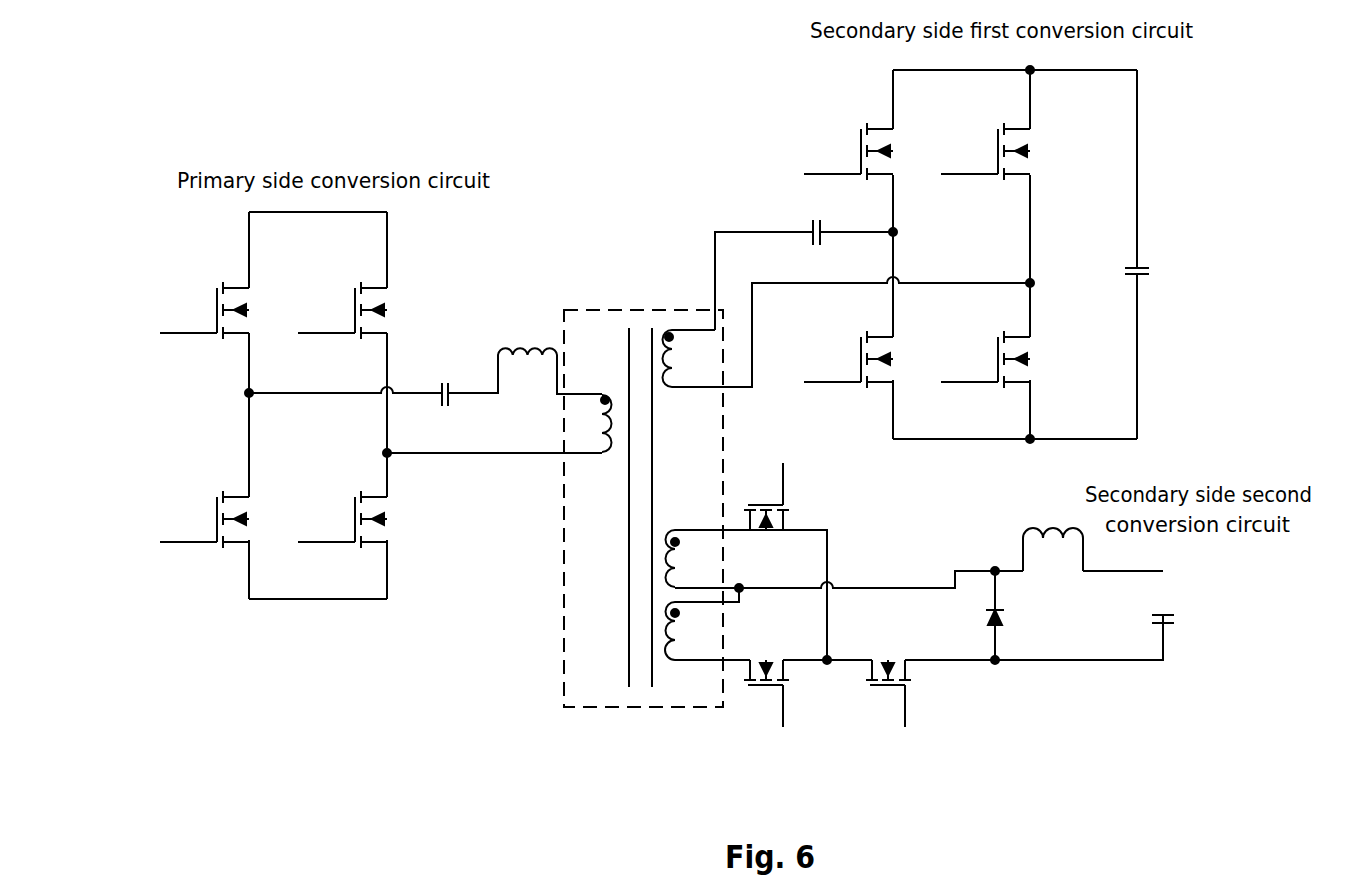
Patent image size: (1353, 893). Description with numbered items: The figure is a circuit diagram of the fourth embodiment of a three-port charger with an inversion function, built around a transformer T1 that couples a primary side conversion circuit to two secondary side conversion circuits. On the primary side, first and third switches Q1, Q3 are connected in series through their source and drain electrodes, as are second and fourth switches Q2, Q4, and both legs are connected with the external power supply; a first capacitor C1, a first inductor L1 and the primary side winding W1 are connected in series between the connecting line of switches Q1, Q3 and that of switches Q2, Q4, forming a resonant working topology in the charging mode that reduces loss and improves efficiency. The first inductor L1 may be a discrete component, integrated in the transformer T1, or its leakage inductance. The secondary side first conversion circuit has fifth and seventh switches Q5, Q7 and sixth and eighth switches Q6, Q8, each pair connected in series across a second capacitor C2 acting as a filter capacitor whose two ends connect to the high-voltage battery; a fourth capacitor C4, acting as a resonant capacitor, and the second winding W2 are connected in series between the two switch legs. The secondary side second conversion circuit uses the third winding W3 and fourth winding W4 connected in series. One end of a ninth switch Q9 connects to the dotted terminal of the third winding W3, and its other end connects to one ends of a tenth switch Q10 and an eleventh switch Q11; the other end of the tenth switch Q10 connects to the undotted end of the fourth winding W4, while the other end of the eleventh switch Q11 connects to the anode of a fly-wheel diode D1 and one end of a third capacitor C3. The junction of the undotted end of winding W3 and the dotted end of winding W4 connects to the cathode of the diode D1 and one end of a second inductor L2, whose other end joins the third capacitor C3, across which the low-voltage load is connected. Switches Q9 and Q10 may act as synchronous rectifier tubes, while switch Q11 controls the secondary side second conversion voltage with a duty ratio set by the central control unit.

The first switch Q1 is at (204, 282).
The second switch Q2 is at (342, 282).
The third switch Q3 is at (204, 489).
The fourth switch Q4 is at (342, 489).
The fifth switch Q5 is at (848, 135).
The sixth switch Q6 is at (985, 135).
The seventh switch Q7 is at (848, 343).
The eighth switch Q8 is at (985, 343).
The ninth switch Q9 is at (736, 496).
The tenth switch Q10 is at (728, 693).
The eleventh switch Q11 is at (926, 693).
The first capacitor C1 is at (463, 378).
The second capacitor C2 is at (1154, 254).
The third capacitor C3 is at (1180, 621).
The fourth capacitor C4 is at (815, 219).
The first inductor L1 is at (550, 357).
The second inductor L2 is at (1053, 539).
The transformer T1 is at (643, 508).
The primary side winding W1 is at (590, 423).
The second winding W2 is at (708, 358).
The third winding W3 is at (690, 558).
The fourth winding W4 is at (690, 631).
The fly-wheel diode D1 is at (1014, 615).